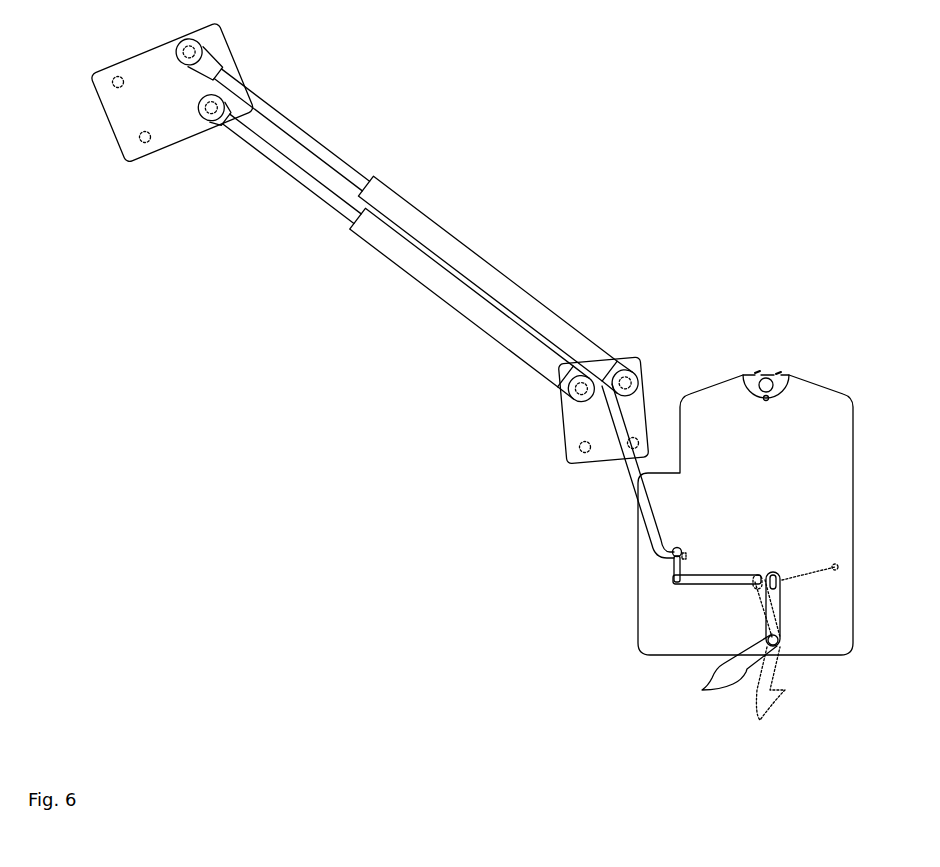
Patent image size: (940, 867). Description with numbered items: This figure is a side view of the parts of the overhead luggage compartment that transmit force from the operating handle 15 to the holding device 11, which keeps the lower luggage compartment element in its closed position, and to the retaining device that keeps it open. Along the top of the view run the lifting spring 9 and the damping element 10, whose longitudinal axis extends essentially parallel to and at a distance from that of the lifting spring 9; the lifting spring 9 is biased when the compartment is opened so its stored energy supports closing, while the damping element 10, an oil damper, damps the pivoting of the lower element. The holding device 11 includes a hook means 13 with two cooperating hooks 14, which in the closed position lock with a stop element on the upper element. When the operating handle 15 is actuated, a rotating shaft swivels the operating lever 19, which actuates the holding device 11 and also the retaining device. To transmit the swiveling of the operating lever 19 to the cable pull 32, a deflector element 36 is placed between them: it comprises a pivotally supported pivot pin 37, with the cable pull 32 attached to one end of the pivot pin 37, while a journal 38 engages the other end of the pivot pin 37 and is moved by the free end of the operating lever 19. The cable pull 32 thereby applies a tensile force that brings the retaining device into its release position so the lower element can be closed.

The lifting spring 9 is at (407, 215).
The damping element 10 is at (382, 245).
The holding device 11 is at (780, 350).
The hook means 13 is at (745, 352).
The hooks 14 is at (778, 373).
The operating handle 15 is at (717, 673).
The operating lever 19 is at (770, 598).
The cable pull 32 is at (628, 468).
The deflector element 36 is at (662, 606).
The pivot pin 37 is at (652, 573).
The journal 38 is at (709, 579).